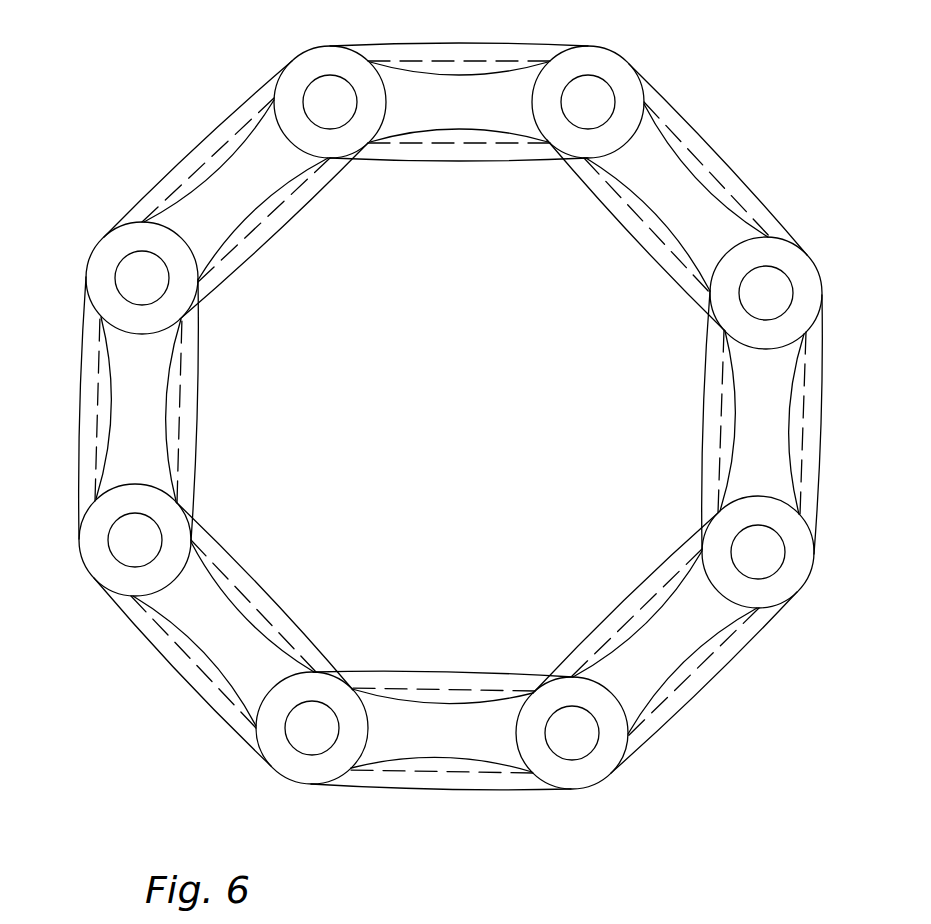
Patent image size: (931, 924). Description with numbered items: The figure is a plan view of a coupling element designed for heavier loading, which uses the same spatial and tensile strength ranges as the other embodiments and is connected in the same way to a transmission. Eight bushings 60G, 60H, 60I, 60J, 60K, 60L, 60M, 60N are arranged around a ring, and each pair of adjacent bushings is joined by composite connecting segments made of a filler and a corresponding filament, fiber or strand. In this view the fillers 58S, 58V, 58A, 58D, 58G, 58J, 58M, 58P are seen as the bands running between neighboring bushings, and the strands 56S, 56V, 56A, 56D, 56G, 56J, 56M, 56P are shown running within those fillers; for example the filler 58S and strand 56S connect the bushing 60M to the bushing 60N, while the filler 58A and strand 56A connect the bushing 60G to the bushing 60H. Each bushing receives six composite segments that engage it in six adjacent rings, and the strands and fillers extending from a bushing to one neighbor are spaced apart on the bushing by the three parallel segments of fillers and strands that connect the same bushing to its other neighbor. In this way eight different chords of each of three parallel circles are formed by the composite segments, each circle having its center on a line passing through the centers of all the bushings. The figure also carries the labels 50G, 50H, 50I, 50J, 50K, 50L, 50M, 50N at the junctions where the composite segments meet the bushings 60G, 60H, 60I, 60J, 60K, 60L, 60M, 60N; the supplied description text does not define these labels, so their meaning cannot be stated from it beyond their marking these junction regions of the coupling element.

The hub 50G is at (694, 321).
The hub 50H is at (695, 524).
The hub 50I is at (550, 664).
The hub 50J is at (342, 665).
The hub 50K is at (207, 515).
The hub 50L is at (201, 308).
The hub 50M is at (357, 178).
The hub 50N is at (560, 178).
The bushing 60G is at (773, 282).
The bushing 60H is at (768, 558).
The bushing 60I is at (580, 740).
The bushing 60J is at (305, 740).
The bushing 60K is at (125, 550).
The bushing 60L is at (138, 262).
The bushing 60M is at (325, 86).
The bushing 60N is at (593, 97).
The filler 58A is at (700, 437).
The filler 58D is at (695, 695).
The filler 58G is at (473, 782).
The filler 58J is at (193, 687).
The filler 58M is at (90, 440).
The filler 58P is at (208, 133).
The filler 58S is at (457, 47).
The filler 58V is at (705, 142).
The strand 56A is at (722, 377).
The strand 56D is at (717, 648).
The strand 56G is at (435, 773).
The strand 56J is at (223, 697).
The strand 56M is at (98, 343).
The strand 56P is at (200, 170).
The strand 56S is at (497, 63).
The strand 56V is at (732, 190).